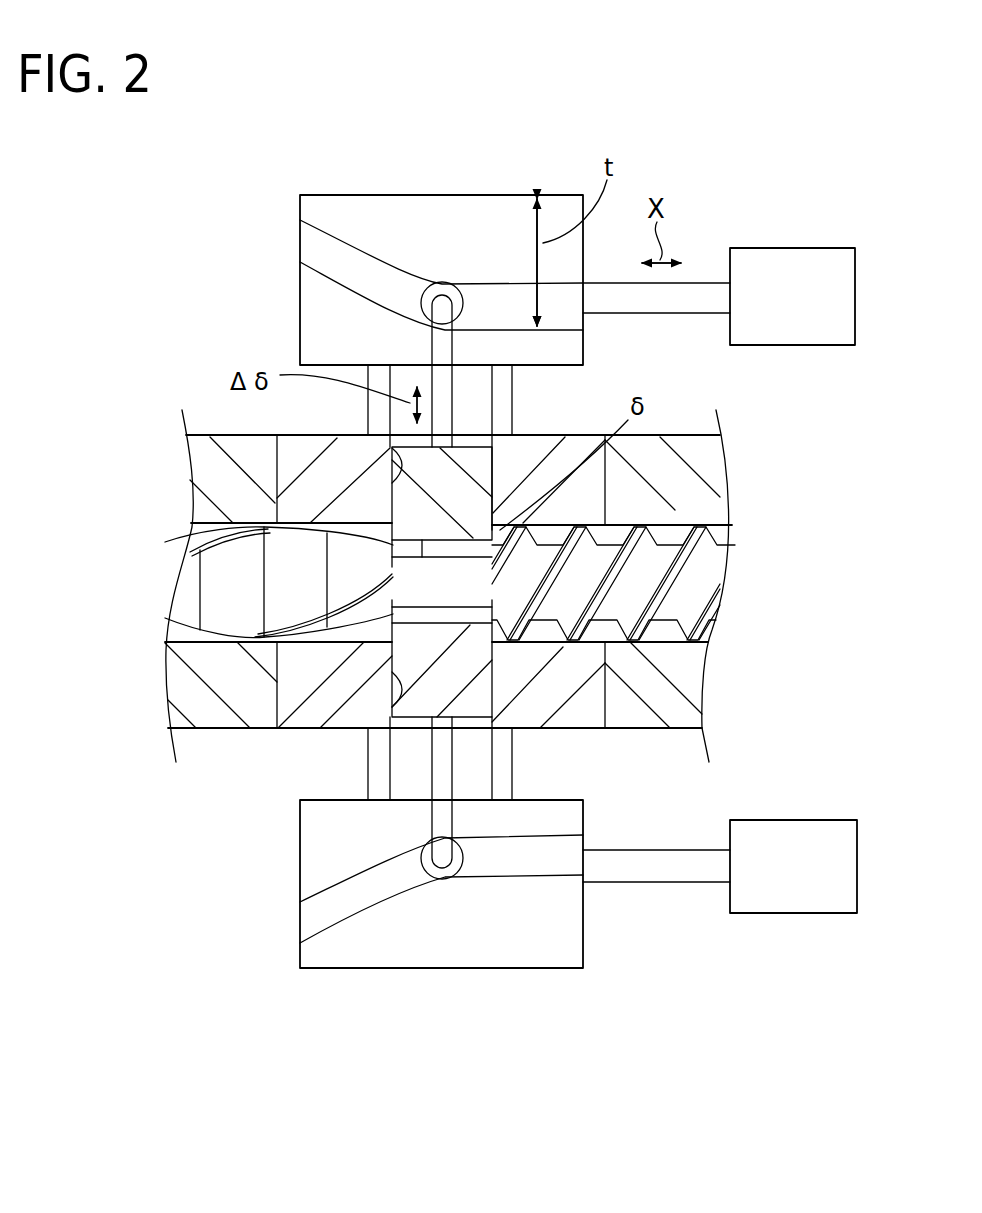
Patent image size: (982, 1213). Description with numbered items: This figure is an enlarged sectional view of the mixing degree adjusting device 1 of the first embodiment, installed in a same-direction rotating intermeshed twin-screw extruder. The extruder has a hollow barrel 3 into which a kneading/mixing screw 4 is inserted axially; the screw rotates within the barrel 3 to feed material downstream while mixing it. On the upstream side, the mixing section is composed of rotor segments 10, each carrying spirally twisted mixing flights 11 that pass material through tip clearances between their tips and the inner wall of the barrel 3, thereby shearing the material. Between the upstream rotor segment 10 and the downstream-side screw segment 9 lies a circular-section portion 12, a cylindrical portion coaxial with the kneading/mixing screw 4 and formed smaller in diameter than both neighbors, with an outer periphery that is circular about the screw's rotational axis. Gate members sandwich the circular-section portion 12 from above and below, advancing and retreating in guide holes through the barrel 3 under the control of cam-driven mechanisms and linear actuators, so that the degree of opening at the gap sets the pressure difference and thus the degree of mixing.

The mixing degree adjusting device 1 is at (732, 206).
The barrel 3 is at (718, 452).
The kneading/mixing screw 4 is at (697, 583).
The screw segment 9 is at (690, 640).
The rotor segment 10 is at (188, 600).
The mixing flight 11 is at (195, 530).
The circular-section portion 12 is at (400, 673).